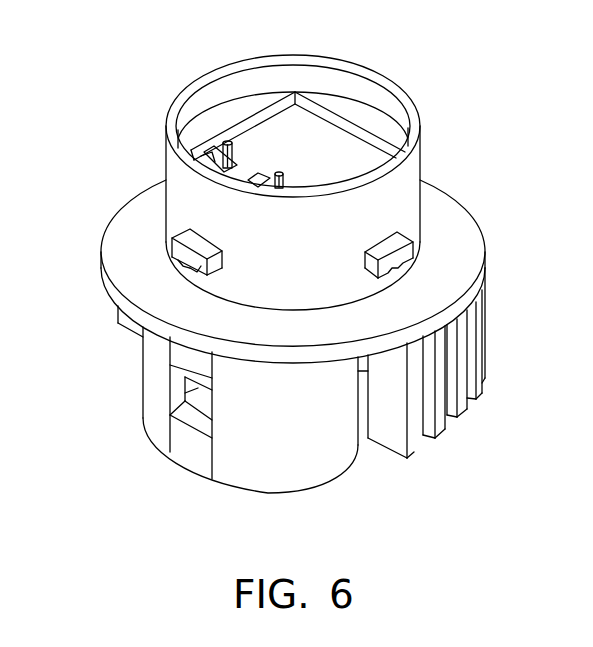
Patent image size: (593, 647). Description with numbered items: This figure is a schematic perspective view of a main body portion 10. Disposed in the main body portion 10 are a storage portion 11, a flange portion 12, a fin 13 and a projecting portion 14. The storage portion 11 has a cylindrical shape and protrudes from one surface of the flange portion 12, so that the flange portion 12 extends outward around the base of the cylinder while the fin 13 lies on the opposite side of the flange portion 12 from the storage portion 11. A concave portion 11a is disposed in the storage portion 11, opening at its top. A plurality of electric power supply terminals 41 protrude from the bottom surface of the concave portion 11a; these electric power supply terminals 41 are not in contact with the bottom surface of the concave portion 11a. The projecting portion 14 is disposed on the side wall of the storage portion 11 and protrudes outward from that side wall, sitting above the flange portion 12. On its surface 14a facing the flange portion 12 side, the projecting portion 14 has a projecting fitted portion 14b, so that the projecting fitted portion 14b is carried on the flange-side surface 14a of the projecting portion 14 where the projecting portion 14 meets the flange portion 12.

The main body portion 10 is at (493, 190).
The storage portion 11 is at (291, 289).
The concave portion 11a is at (251, 128).
The electric power supply terminals 41 is at (189, 157).
The flange portion 12 is at (332, 357).
The fin 13 is at (414, 452).
The projecting portion 14 is at (165, 259).
The surface 14a is at (198, 276).
The projecting fitted portion 14b is at (183, 274).